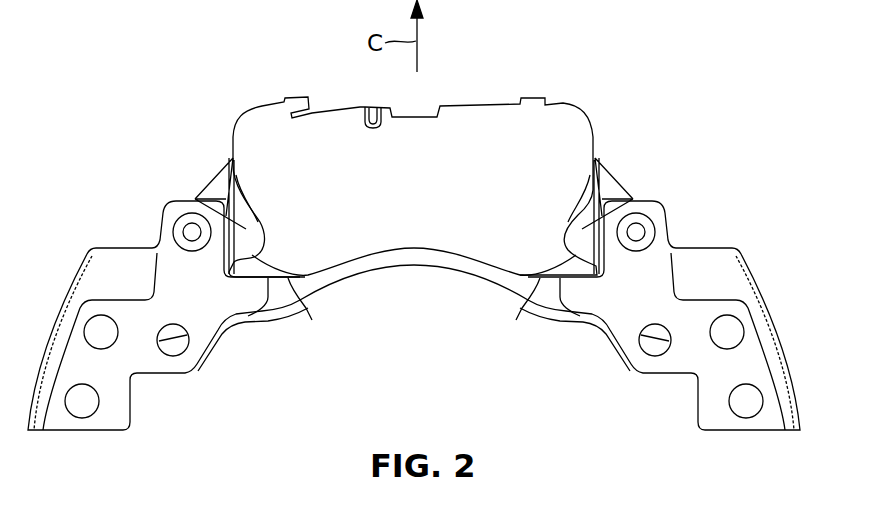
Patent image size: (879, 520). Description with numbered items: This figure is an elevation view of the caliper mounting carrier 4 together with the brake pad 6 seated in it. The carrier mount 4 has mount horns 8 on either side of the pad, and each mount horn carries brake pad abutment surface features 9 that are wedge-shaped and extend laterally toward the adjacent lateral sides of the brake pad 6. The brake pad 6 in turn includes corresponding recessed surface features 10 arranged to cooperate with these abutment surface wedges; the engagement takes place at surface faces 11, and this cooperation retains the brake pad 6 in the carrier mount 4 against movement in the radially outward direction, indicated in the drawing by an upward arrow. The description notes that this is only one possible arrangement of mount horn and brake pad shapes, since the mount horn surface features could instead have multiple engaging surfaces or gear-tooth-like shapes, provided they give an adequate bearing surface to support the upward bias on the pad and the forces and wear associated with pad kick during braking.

The caliper mounting carrier 4 is at (109, 246).
The brake pad 6 is at (247, 121).
The mount horns 8 is at (598, 165).
The brake pad abutment surface features 9 is at (624, 196).
The recessed surface features 10 is at (573, 220).
The surface faces 11 is at (542, 308).